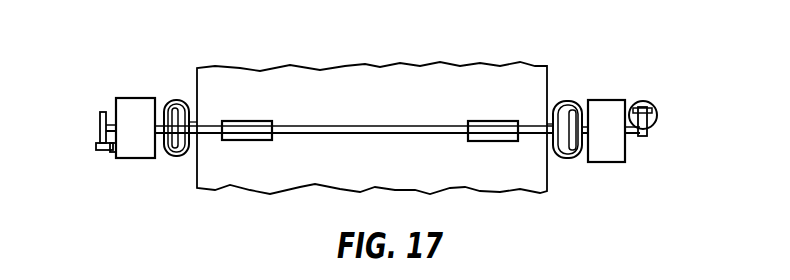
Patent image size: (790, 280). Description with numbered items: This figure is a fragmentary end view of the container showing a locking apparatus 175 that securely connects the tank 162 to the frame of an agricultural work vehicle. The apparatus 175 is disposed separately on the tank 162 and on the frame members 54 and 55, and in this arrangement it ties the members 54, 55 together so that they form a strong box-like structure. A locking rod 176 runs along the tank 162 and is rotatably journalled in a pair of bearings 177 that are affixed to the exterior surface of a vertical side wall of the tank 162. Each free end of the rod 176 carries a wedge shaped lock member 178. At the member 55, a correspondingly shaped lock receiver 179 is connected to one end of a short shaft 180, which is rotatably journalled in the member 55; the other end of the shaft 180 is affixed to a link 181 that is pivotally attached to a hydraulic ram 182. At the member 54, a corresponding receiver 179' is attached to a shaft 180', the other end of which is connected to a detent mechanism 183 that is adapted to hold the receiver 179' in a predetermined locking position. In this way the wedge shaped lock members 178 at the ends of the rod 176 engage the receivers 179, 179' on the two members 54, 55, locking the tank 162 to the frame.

The member 54 is at (140, 158).
The member 55 is at (616, 163).
The tank 162 is at (453, 80).
The locking apparatus 175 is at (565, 73).
The locking rod 176 is at (367, 136).
The bearings 177 is at (240, 141).
The wedge shaped lock member 178 is at (188, 122).
The lock receiver 179 is at (571, 155).
The receiver 179' is at (162, 104).
The short shaft 180 is at (653, 153).
The shaft 180' is at (94, 92).
The link 181 is at (648, 131).
The hydraulic ram 182 is at (652, 109).
The detent mechanism 183 is at (99, 127).